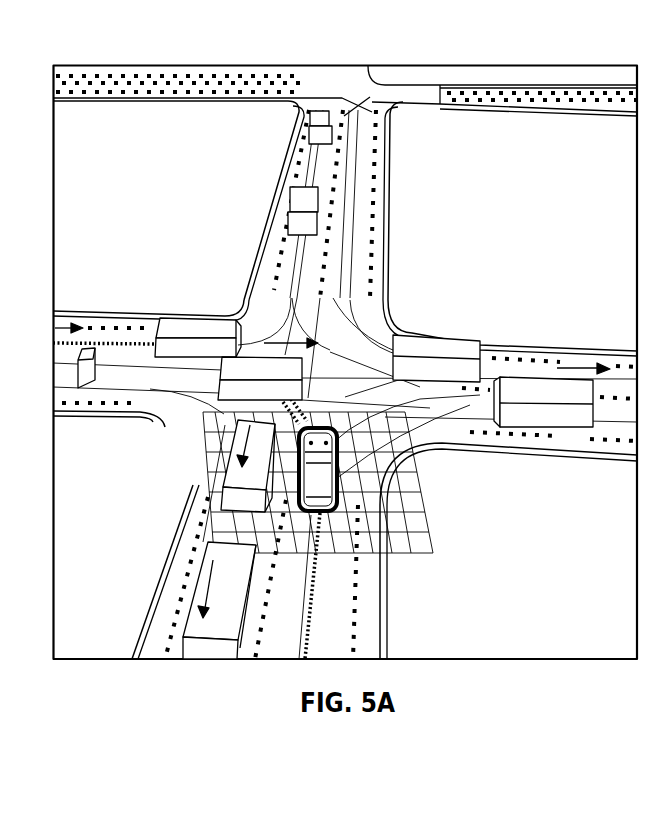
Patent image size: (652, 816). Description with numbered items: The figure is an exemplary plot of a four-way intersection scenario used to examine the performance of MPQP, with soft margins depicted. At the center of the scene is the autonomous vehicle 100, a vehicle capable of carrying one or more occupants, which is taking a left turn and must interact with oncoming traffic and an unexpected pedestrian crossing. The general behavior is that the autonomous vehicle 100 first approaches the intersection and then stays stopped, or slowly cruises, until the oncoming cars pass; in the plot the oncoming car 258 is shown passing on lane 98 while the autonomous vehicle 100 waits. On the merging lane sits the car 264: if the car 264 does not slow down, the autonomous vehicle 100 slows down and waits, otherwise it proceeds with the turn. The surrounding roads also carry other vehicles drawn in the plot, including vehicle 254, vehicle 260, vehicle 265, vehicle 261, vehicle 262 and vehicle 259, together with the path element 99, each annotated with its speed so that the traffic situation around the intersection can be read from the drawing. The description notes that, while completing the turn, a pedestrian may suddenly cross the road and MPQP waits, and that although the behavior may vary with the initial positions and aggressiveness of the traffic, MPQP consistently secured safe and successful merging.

The stationary vehicle north of intersection 254 is at (331, 88).
The stationary vehicle north of intersection 260 is at (304, 243).
The stationary vehicle west approach 265 is at (141, 290).
The lane 98 is at (142, 375).
The oncoming car 258 is at (340, 366).
The vehicle south of intersection 99 is at (252, 413).
The stationary vehicle south approach 261 is at (209, 456).
The stationary vehicle south approach 262 is at (182, 600).
The car on the merging lane 264 is at (408, 320).
The moving vehicle on east road 259 is at (582, 428).
The autonomous vehicle 100 is at (337, 480).